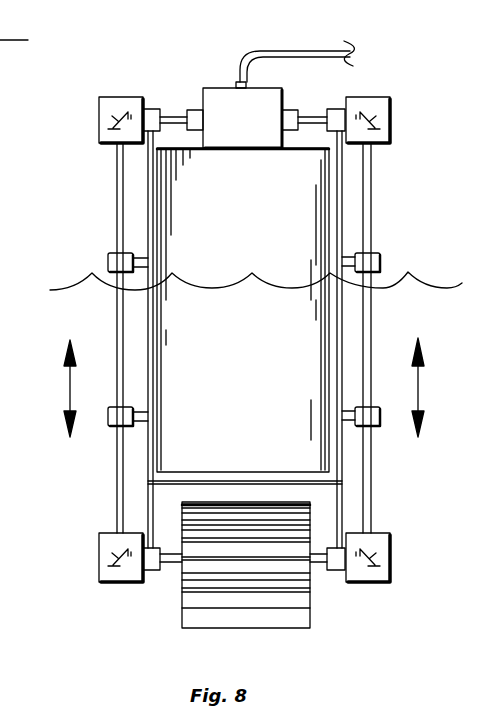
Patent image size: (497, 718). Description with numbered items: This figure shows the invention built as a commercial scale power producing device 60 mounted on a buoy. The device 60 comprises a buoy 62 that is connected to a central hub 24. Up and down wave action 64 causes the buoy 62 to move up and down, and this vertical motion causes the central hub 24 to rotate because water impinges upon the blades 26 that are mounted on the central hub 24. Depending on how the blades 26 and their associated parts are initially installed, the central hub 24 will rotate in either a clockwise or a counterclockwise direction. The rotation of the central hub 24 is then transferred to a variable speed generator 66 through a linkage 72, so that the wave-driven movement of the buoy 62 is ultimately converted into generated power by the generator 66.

The central hub 24 is at (182, 527).
The blades 26 is at (253, 609).
The commercial scale power producing device 60 is at (150, 200).
The buoy 62 is at (275, 217).
The up and down wave action 64 is at (70, 389).
The variable speed generator 66 is at (220, 88).
The linkage 72 is at (117, 228).